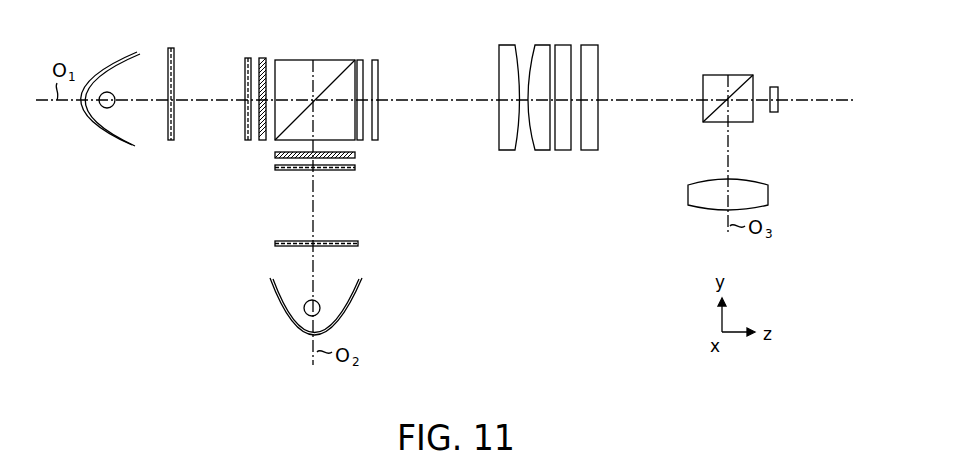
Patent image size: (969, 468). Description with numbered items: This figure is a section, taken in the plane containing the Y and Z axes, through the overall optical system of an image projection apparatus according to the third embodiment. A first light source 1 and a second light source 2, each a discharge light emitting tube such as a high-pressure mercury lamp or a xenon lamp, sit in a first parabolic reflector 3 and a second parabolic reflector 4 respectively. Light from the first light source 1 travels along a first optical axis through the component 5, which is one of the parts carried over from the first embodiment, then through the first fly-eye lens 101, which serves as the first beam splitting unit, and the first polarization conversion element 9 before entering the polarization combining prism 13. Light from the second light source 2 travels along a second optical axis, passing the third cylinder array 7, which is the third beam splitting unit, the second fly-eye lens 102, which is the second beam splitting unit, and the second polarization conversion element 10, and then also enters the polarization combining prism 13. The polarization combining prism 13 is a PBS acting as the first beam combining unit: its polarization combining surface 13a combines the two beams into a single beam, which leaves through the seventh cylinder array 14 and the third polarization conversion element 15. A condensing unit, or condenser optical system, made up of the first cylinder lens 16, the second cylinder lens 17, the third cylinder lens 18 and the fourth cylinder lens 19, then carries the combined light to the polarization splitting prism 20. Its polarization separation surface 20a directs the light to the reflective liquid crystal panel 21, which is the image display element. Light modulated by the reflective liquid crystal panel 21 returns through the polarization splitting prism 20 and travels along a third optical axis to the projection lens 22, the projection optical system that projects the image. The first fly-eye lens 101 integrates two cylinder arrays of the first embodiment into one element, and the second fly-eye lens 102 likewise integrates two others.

The first light source 1 is at (107, 108).
The second light source 2 is at (320, 309).
The first parabolic reflector 3 is at (135, 148).
The second parabolic reflector 4 is at (362, 292).
The polarization conversion element 5 is at (171, 46).
The third cylinder array 7 is at (358, 244).
The first polarization conversion element 9 is at (262, 57).
The second polarization conversion element 10 is at (360, 155).
The polarization combining prism 13 is at (286, 59).
The polarization combining surface 13a is at (345, 60).
The seventh cylinder array 14 is at (360, 59).
The third polarization conversion element 15 is at (376, 59).
The first cylinder lens 16 is at (508, 150).
The second cylinder lens 17 is at (543, 150).
The third cylinder lens 18 is at (563, 150).
The fourth cylinder lens 19 is at (589, 150).
The polarization splitting prism 20 is at (712, 74).
The polarization separation surface 20a is at (742, 74).
The reflective liquid crystal panel 21 is at (774, 113).
The projection lens 22 is at (768, 192).
The first fly-eye lens 101 is at (246, 57).
The second fly-eye lens 102 is at (355, 168).